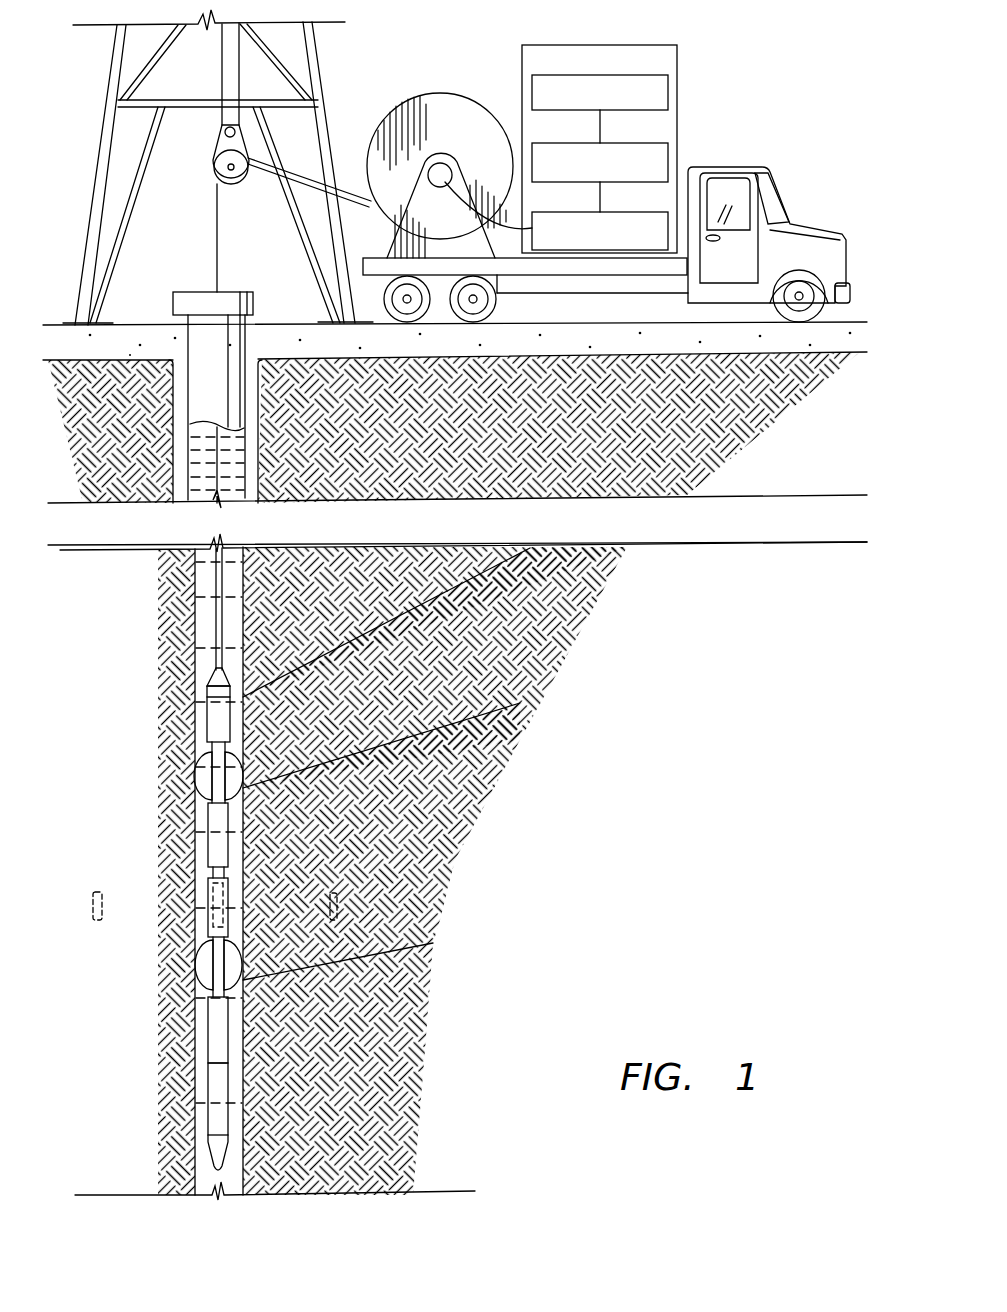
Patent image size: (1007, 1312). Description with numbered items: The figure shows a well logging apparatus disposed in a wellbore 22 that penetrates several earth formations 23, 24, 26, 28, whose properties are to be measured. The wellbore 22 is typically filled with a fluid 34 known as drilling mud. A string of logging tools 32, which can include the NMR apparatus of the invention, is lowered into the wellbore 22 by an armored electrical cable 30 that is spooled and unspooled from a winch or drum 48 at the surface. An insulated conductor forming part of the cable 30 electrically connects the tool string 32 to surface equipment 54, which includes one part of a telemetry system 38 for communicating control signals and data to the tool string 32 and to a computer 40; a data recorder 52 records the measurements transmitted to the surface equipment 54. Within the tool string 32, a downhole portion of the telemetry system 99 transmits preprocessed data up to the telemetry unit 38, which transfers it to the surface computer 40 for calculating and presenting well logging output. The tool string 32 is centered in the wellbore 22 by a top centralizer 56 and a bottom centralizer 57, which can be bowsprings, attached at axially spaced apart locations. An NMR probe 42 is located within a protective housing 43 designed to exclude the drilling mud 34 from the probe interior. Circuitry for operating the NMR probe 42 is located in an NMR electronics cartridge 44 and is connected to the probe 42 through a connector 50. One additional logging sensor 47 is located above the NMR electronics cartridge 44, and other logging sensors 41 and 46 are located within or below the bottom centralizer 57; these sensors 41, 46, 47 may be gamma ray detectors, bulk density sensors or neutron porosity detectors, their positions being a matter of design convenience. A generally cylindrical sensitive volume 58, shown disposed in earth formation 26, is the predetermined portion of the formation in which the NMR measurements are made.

The wellbore 22 is at (176, 1152).
The earth formation 23 is at (326, 604).
The earth formation 24 is at (326, 718).
The earth formation 26 is at (326, 839).
The earth formation 28 is at (326, 1071).
The armored electrical cable 30 is at (215, 640).
The string of logging tools 32 is at (221, 914).
The fluid 34 is at (206, 591).
The telemetry system 38 is at (618, 212).
The computer 40 is at (618, 143).
The logging sensor 41 is at (208, 1026).
The NMR probe 42 is at (212, 920).
The protective housing 43 is at (208, 896).
The NMR electronics cartridge 44 is at (208, 841).
The logging sensor 46 is at (208, 1086).
The logging sensor 47 is at (197, 726).
The winch or drum 48 is at (440, 95).
The connector 50 is at (208, 871).
The data recorder 52 is at (618, 75).
The surface equipment 54 is at (618, 45).
The top centralizer 56 is at (193, 778).
The bottom centralizer 57 is at (205, 965).
The sensitive volume 58 is at (97, 921).
The downhole portion of the telemetry system 99 is at (206, 683).